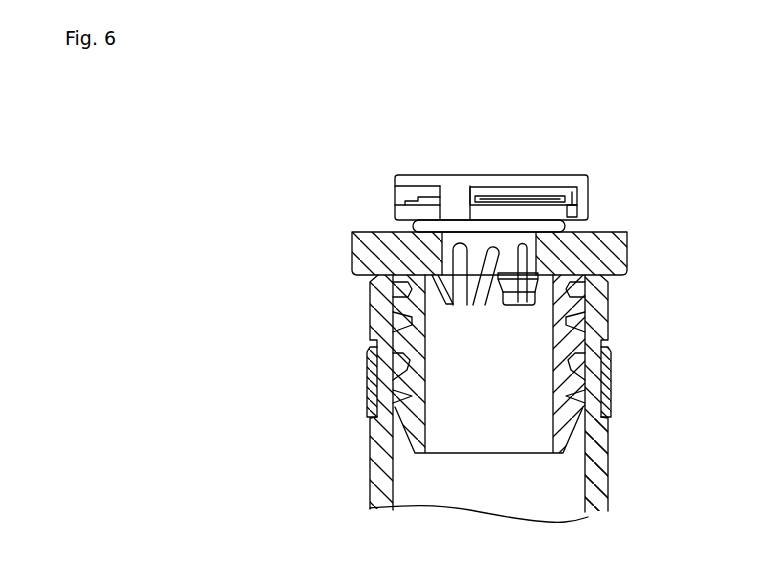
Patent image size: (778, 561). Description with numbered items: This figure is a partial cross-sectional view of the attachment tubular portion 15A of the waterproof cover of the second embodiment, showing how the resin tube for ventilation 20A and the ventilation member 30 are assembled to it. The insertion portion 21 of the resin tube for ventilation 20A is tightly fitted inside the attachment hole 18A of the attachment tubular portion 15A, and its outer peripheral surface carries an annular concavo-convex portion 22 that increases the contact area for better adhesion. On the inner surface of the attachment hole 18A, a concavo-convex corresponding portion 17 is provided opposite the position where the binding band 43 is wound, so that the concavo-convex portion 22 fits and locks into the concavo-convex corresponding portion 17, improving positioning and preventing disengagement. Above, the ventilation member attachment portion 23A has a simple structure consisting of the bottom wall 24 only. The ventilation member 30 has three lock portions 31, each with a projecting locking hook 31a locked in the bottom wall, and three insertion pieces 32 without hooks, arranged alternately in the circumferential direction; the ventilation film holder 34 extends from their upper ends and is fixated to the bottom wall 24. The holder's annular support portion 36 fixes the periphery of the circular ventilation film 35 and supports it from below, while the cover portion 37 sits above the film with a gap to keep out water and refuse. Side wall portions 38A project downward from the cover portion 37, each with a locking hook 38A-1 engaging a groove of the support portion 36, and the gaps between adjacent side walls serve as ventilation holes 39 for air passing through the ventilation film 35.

The ventilation member 30 is at (508, 154).
The ventilation film holder 34 is at (417, 175).
The cover portion 37 is at (483, 175).
The support portion 36 is at (398, 212).
The side wall portion 38A is at (453, 193).
The locking hook 38A-1 is at (572, 210).
The ventilation hole 39 is at (400, 195).
The ventilation film 35 is at (543, 195).
The resin tube for ventilation 20A is at (513, 358).
The ventilation member attachment portion 23A is at (625, 238).
The bottom wall 24 is at (607, 240).
The attachment hole 18A is at (402, 462).
The binding band 43 is at (370, 380).
The concavo-convex corresponding portion 17 is at (363, 364).
The concavo-convex portion 22 is at (397, 362).
The insertion portion 21 is at (587, 437).
The attachment tubular portion 15A is at (602, 485).
The insertion piece 32 is at (473, 305).
The locking hook 31a is at (528, 281).
The lock portion 31 is at (515, 298).